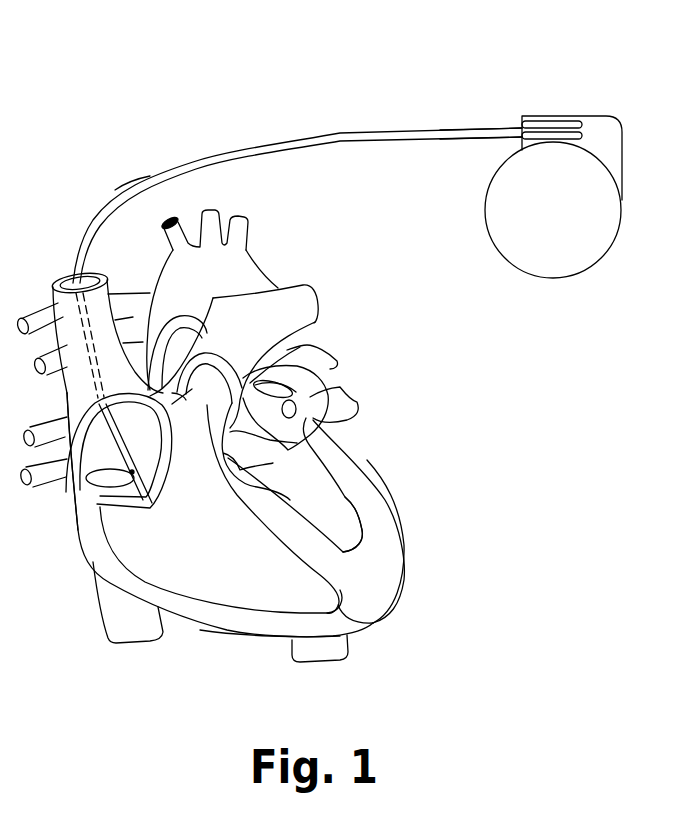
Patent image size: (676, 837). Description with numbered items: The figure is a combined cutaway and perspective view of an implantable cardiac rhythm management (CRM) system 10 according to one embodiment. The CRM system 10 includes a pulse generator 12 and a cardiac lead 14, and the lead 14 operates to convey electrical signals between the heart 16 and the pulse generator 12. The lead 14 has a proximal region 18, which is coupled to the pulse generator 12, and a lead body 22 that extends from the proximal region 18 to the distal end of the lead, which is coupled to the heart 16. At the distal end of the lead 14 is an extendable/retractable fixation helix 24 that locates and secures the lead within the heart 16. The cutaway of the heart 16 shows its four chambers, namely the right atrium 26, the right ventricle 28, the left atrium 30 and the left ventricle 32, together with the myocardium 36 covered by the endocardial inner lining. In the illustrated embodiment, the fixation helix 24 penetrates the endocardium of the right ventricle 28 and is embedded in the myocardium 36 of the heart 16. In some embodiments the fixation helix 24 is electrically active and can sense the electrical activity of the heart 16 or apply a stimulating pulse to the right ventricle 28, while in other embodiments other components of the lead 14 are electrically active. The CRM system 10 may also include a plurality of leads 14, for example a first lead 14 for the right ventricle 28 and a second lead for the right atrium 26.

The CRM system 10 is at (252, 56).
The pulse generator 12 is at (576, 87).
The cardiac lead 14 is at (285, 143).
The heart 16 is at (368, 334).
The proximal region 18 is at (470, 128).
The lead body 22 is at (190, 163).
The fixation helix 24 is at (368, 625).
The right atrium 26 is at (95, 433).
The right ventricle 28 is at (110, 580).
The left atrium 30 is at (267, 407).
The left ventricle 32 is at (346, 508).
The myocardium 36 is at (242, 623).